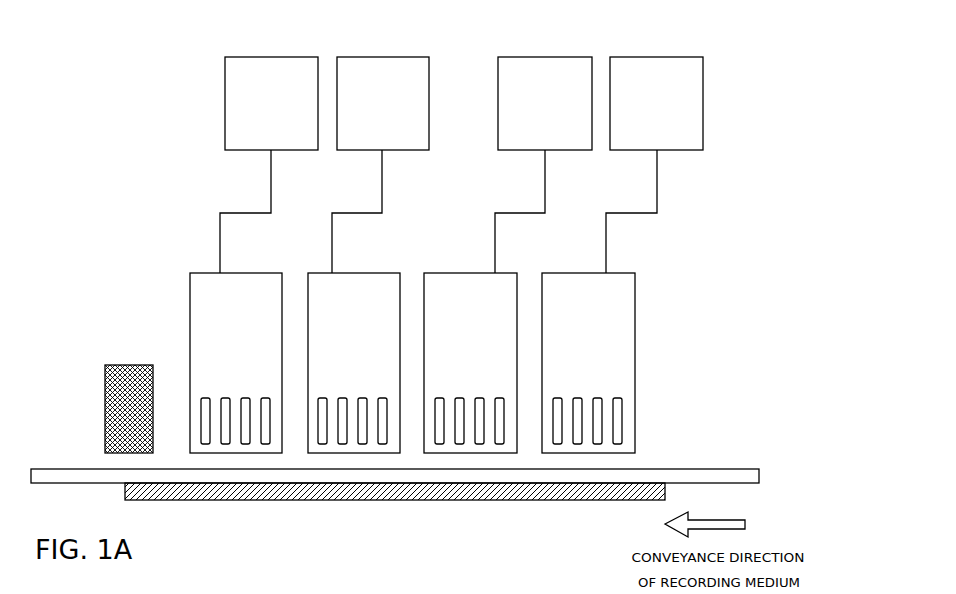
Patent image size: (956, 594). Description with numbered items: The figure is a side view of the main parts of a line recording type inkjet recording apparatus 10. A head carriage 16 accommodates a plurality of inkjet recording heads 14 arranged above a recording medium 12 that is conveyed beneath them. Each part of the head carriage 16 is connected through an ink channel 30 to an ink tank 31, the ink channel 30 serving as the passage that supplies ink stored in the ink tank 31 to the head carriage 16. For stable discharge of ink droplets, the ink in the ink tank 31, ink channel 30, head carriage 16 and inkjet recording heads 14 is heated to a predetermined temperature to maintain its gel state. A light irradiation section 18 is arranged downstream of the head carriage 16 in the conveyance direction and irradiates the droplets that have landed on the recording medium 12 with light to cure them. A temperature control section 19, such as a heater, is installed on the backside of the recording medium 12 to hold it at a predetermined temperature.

The inkjet recording apparatus 10 is at (770, 231).
The recording medium 12 is at (731, 469).
The inkjet recording head 14 is at (618, 413).
The head carriage 16 is at (238, 273).
The light irradiation section 18 is at (126, 365).
The temperature control section 19 is at (548, 500).
The ink channel 30 is at (662, 189).
The ink tank 31 is at (657, 57).